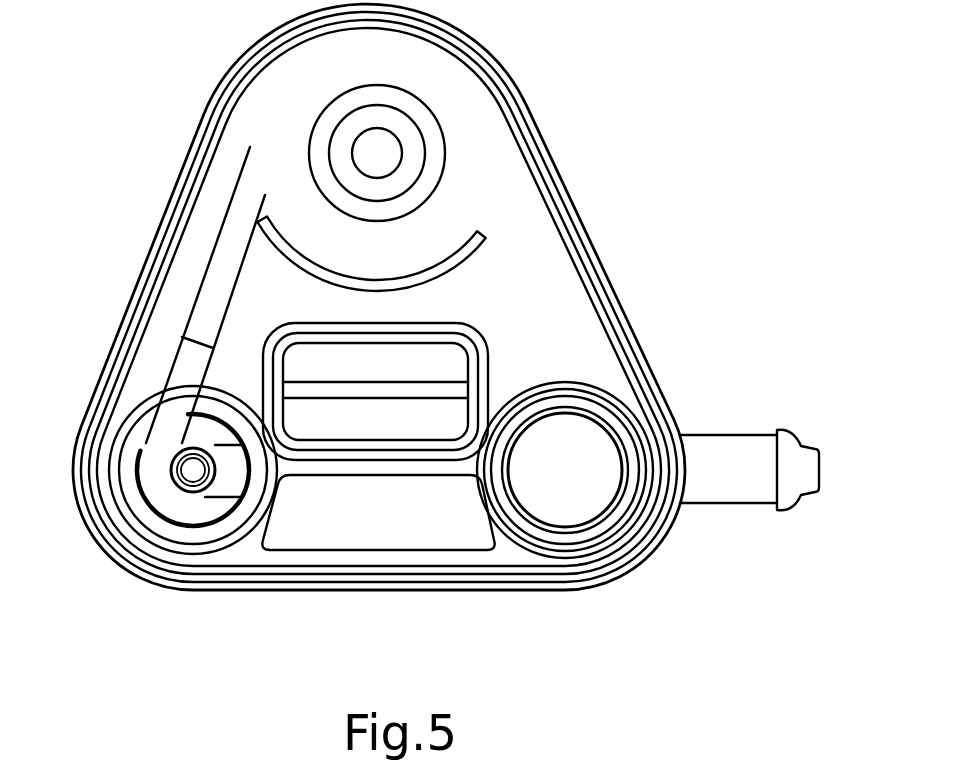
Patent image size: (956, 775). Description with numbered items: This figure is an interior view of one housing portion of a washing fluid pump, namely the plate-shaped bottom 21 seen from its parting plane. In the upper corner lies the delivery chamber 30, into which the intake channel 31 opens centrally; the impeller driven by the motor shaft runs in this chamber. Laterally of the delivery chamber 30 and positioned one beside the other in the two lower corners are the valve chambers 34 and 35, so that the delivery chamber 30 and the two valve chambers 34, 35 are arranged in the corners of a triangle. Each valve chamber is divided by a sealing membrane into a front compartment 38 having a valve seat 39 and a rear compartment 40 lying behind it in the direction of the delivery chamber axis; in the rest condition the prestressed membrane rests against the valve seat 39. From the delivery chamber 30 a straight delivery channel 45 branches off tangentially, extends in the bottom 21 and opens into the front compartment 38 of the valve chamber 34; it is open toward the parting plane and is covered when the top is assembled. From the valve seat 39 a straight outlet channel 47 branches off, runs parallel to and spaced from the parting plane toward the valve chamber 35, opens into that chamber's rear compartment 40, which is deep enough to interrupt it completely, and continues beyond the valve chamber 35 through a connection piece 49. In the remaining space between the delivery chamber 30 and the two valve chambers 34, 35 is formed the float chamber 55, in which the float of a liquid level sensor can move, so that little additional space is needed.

The bottom 21 is at (525, 188).
The delivery chamber 30 is at (447, 80).
The intake channel 31 is at (385, 150).
The valve chamber 34 is at (125, 572).
The valve chamber 35 is at (587, 497).
The front compartment 38 is at (180, 513).
The valve seat 39 is at (233, 498).
The rear compartment 40 is at (587, 447).
The delivery channel 45 is at (208, 293).
The outlet channel 47 is at (200, 490).
The connection piece 49 is at (757, 447).
The float chamber 55 is at (372, 427).